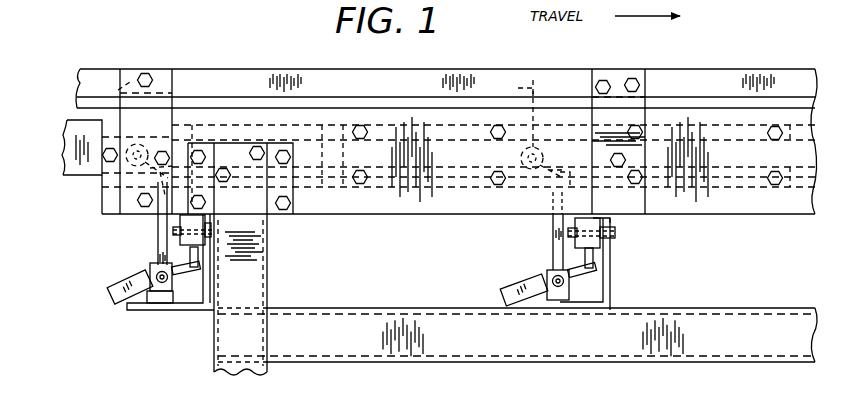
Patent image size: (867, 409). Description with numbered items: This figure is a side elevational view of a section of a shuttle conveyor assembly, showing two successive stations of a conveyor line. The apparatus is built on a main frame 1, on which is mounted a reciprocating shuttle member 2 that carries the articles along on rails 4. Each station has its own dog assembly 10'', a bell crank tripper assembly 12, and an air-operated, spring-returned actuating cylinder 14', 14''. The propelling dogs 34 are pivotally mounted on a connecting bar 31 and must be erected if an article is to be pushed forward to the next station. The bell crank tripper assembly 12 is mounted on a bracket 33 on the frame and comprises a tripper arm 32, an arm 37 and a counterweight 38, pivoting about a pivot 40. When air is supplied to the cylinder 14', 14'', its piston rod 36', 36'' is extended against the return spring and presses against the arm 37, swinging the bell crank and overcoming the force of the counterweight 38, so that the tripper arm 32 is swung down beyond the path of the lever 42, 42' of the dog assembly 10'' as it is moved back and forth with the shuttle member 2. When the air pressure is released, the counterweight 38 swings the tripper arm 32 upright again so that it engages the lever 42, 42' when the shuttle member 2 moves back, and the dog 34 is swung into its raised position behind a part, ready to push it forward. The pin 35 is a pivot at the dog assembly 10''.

The main frame 1 is at (278, 294).
The reciprocating shuttle member 2 is at (62, 136).
The rails 4 is at (730, 98).
The dog assembly 10'' is at (117, 176).
The bell crank tripper assembly 12 is at (376, 262).
The actuating cylinder 14' is at (631, 233).
The actuating cylinder 14'' is at (216, 219).
The connecting bar 31 is at (92, 178).
The tripper arm 32 is at (158, 221).
The bracket 33 is at (151, 309).
The propelling dog 34 is at (135, 140).
The pivot pin 35 is at (128, 125).
The piston rod 36' is at (609, 258).
The piston rod 36'' is at (213, 270).
The arm 37 is at (183, 280).
The counterweight 38 is at (120, 282).
The pivot housing 40 is at (152, 270).
The lever 42 is at (552, 163).
The lever 42' is at (123, 193).